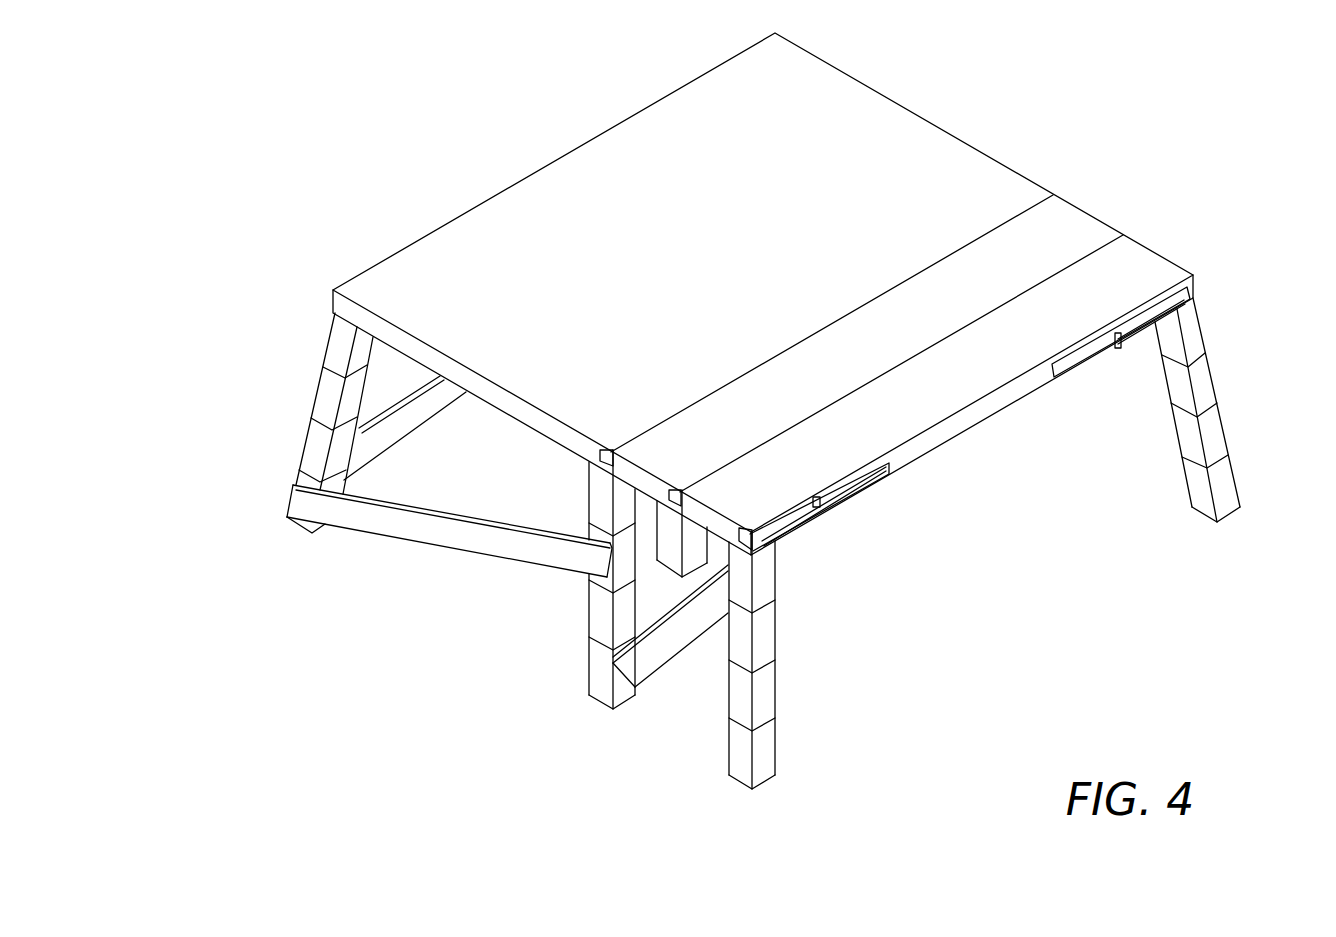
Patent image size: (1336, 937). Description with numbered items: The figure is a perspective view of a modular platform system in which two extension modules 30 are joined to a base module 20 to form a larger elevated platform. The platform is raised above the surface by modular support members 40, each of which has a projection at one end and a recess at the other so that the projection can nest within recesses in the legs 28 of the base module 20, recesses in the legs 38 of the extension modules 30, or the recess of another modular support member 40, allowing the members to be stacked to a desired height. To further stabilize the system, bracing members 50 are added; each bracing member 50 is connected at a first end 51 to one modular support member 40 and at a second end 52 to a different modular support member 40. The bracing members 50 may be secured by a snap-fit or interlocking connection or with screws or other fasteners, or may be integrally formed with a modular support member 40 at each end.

The base module 20 is at (931, 88).
The extension module 30 is at (1106, 186).
The legs of base module 28 is at (338, 343).
The legs of extension modules 38 is at (765, 580).
The modular support member 40 is at (310, 482).
The bracing member 50 is at (324, 553).
The first end of bracing member 51 is at (305, 502).
The second end of bracing member 52 is at (596, 557).